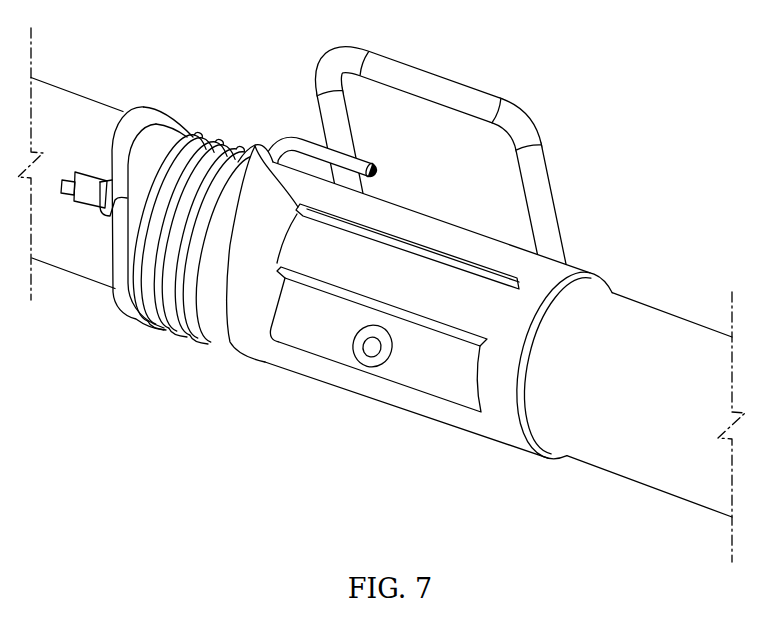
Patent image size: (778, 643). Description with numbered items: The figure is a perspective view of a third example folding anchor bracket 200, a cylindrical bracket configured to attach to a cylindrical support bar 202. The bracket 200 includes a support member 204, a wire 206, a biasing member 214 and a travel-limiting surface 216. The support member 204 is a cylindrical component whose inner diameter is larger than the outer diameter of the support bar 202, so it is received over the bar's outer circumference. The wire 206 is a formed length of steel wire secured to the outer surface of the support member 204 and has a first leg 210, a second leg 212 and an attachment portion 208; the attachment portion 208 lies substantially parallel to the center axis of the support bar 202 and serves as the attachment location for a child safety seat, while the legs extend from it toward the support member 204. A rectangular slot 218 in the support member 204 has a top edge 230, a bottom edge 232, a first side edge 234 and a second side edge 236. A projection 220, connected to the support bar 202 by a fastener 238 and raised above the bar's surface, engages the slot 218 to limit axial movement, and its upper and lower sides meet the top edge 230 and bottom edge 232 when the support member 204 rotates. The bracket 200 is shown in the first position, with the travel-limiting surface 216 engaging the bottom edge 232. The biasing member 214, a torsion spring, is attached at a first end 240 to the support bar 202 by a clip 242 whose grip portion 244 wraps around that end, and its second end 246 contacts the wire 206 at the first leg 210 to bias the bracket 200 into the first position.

The bracket 200 is at (381, 295).
The support bar 202 is at (642, 310).
The support member 204 is at (573, 273).
The wire 206 is at (527, 122).
The attachment portion 208 is at (443, 85).
The first leg 210 is at (328, 116).
The second leg 212 is at (543, 173).
The biasing member 214 is at (170, 332).
The travel-limiting surface 216 is at (417, 392).
The slot 218 is at (248, 240).
The projection 220 is at (403, 372).
The top edge 230 is at (397, 238).
The bottom edge 232 is at (334, 367).
The first side edge 234 is at (256, 146).
The second side edge 236 is at (500, 323).
The fastener 238 is at (380, 338).
The first end 240 is at (110, 214).
The clip 242 is at (146, 112).
The grip portion 244 is at (80, 183).
The second end 246 is at (355, 168).